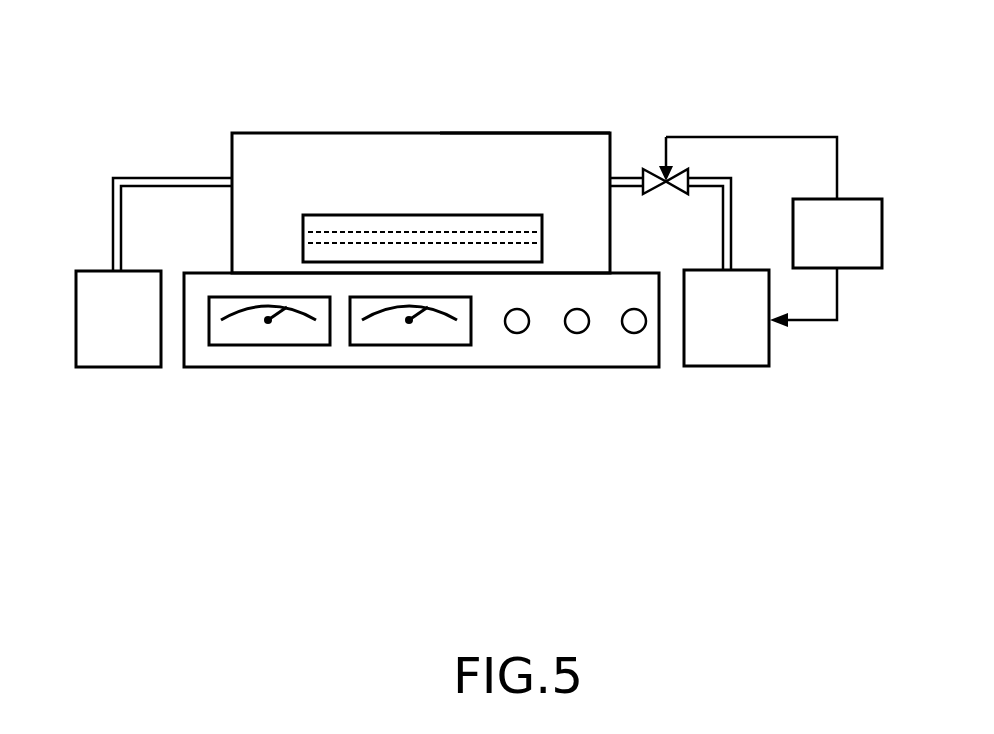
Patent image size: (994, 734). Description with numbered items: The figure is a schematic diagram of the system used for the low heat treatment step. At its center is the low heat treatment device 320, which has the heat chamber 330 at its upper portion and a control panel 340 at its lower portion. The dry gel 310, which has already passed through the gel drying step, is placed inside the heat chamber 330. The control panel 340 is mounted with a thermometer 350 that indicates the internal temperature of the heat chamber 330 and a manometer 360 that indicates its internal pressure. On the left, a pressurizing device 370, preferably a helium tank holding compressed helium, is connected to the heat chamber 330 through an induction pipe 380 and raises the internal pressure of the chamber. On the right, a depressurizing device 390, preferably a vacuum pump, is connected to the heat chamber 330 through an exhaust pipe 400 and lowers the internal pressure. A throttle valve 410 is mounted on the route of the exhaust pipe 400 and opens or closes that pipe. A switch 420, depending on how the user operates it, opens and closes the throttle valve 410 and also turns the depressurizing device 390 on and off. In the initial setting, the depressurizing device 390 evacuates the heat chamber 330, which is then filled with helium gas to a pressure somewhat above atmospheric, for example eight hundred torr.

The dry gel 310 is at (367, 214).
The low heat treatment device 320 is at (277, 123).
The heat chamber 330 is at (503, 141).
The control panel 340 is at (553, 359).
The thermometer 350 is at (252, 348).
The manometer 360 is at (410, 348).
The pressurizing device 370 is at (85, 268).
The induction pipe 380 is at (143, 180).
The depressurizing device 390 is at (719, 367).
The exhaust pipe 400 is at (623, 178).
The throttle valve 410 is at (677, 191).
The switch 420 is at (868, 197).